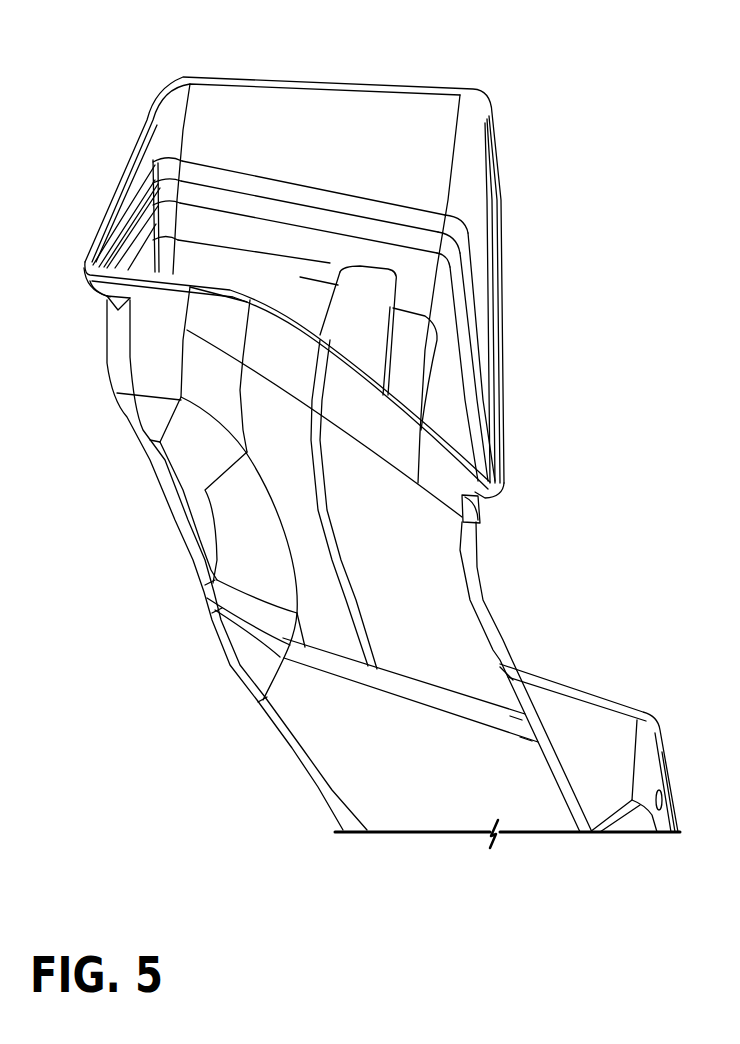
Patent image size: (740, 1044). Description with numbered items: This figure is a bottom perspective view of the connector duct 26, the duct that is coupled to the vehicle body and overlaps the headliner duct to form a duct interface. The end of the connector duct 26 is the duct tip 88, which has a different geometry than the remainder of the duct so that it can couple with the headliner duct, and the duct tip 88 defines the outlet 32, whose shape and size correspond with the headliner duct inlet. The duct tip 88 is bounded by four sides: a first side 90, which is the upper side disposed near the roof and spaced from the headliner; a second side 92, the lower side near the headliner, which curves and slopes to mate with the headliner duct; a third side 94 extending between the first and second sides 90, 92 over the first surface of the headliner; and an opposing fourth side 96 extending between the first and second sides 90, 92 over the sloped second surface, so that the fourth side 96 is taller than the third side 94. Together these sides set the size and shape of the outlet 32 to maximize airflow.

The connector duct 26 is at (577, 692).
The outlet 32 is at (458, 163).
The duct tip 88 is at (500, 500).
The first side 90 is at (343, 80).
The second side 92 is at (275, 290).
The third side 94 is at (112, 200).
The fourth side 96 is at (498, 252).